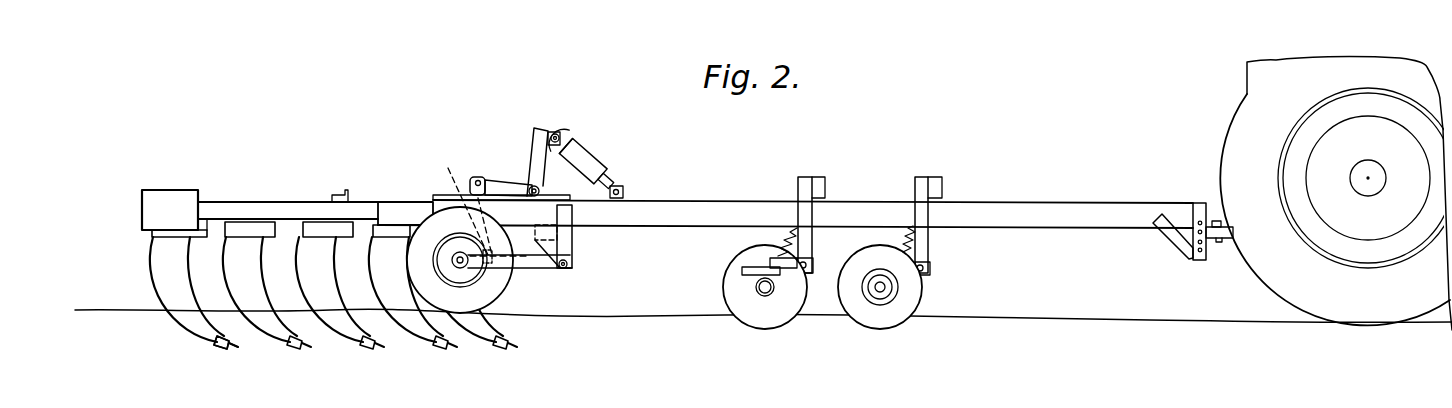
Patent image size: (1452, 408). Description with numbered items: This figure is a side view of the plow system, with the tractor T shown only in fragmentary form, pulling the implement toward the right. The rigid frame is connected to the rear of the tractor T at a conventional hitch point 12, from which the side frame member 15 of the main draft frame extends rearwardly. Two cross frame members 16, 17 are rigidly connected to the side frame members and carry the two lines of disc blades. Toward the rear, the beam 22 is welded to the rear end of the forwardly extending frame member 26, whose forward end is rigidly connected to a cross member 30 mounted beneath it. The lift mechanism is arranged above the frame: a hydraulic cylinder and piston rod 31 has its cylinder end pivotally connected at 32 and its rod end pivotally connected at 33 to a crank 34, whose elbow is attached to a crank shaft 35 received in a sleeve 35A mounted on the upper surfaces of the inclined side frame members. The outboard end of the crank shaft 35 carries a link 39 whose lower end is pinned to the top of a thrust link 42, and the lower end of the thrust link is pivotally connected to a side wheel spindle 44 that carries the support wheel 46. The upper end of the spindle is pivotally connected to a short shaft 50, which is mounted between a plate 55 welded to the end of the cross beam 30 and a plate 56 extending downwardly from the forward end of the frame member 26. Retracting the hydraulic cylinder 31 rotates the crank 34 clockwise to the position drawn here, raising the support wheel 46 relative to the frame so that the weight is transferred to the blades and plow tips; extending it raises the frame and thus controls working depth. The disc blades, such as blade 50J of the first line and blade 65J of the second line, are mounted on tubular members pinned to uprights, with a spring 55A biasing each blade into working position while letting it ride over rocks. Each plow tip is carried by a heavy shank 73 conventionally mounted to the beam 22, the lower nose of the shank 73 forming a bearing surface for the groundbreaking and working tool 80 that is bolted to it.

The hitch point 12 is at (1204, 181).
The side frame member 15 is at (1033, 203).
The cross frame member 16 is at (938, 183).
The cross frame member 17 is at (823, 180).
The beam 22 is at (288, 204).
The forwardly extending frame member 26 is at (392, 204).
The cross member 30 is at (536, 225).
The hydraulic cylinder and piston rod 31 is at (602, 148).
The cylinder end pivot 32 is at (621, 187).
The rod end pivot 33 is at (558, 134).
The crank 34 is at (568, 147).
The crank shaft 35 is at (540, 191).
The sleeve 35A is at (518, 177).
The link 39 is at (496, 177).
The thrust link 42 is at (476, 209).
The side wheel spindle 44 is at (538, 269).
The support wheel 46 is at (497, 292).
The short shaft 50 is at (567, 267).
The disc blade 50J is at (885, 323).
The plate 55 is at (560, 250).
The spring 55A is at (927, 251).
The plate 56 is at (568, 217).
The disc blade 65J is at (747, 327).
The shank 73 is at (180, 327).
The groundbreaking and working tool 80 is at (241, 351).
The tractor T is at (1248, 70).